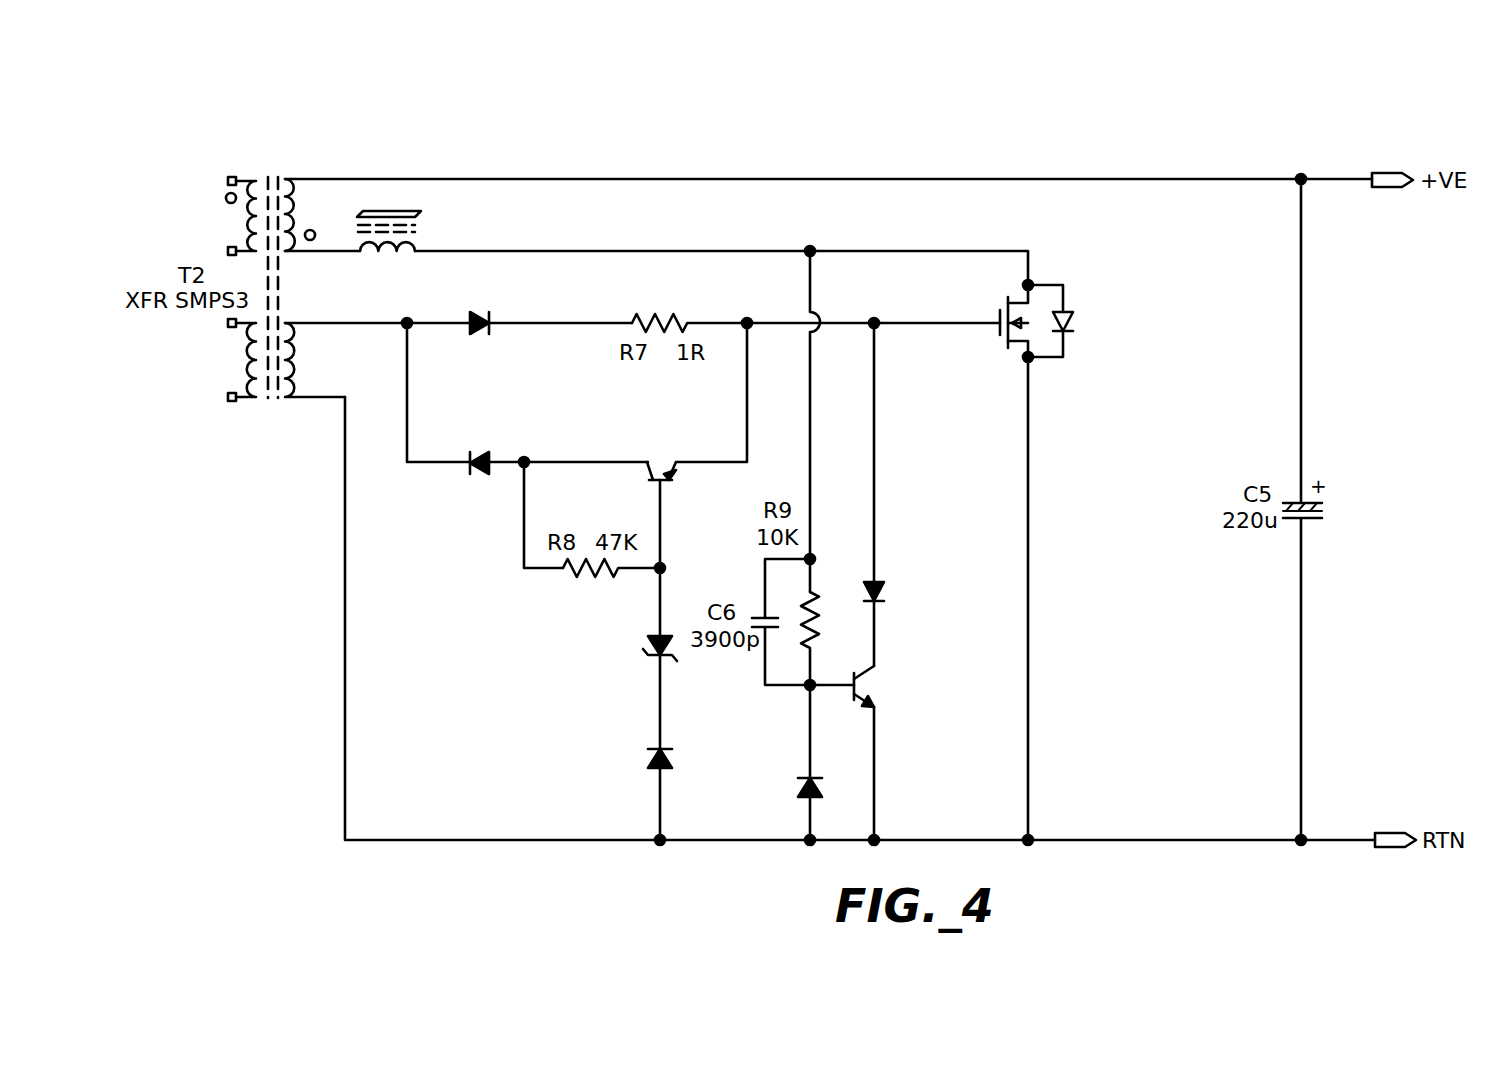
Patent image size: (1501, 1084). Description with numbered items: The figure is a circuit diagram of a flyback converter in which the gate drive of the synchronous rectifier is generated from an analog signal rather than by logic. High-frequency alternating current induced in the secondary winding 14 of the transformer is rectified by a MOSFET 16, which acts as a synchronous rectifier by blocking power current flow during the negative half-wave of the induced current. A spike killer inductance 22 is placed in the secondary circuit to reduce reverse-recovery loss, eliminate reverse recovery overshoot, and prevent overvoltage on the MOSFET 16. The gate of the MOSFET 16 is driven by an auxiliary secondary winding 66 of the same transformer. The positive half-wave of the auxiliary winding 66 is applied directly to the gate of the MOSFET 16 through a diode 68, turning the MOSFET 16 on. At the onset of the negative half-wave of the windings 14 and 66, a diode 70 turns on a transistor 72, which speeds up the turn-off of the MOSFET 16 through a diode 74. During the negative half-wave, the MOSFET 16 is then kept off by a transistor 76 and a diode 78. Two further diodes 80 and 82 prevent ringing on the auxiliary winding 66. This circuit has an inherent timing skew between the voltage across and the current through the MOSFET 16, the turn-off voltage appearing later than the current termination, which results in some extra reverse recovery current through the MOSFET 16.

The secondary winding 14 is at (286, 208).
The spike killer inductance 22 is at (418, 232).
The auxiliary secondary winding 66 is at (294, 368).
The diode 68 is at (477, 313).
The diode 78 is at (478, 452).
The transistor 76 is at (668, 472).
The diode 80 is at (652, 636).
The diode 82 is at (655, 769).
The diode 70 is at (803, 776).
The diode 74 is at (880, 578).
The transistor 72 is at (870, 688).
The MOSFET 16 is at (1048, 300).